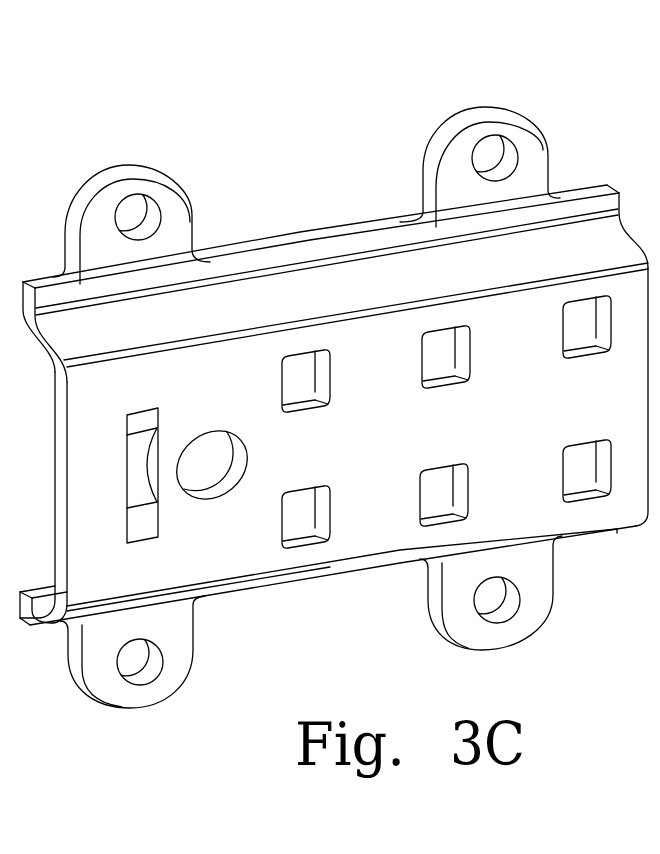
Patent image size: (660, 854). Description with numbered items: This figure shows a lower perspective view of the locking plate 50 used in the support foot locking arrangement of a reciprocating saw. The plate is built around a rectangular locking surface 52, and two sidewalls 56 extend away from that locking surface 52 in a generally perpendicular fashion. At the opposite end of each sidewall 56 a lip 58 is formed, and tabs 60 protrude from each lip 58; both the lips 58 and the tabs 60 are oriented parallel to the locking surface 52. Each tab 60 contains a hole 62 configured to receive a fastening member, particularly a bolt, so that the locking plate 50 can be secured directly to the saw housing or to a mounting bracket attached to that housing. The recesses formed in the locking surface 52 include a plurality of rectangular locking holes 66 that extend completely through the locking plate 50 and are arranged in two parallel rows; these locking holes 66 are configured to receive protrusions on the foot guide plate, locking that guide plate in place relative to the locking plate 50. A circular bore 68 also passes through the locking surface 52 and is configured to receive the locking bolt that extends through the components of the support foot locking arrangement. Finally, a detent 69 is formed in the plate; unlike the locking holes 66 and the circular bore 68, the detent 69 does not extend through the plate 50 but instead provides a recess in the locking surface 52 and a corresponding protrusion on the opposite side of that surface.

The locking plate 50 is at (558, 84).
The locking surface 52 is at (620, 387).
The sidewall 56 is at (87, 316).
The lip 58 is at (277, 255).
The tab 60 is at (107, 183).
The hole 62 is at (492, 143).
The rectangular locking hole 66 is at (437, 341).
The circular bore 68 is at (215, 466).
The detent 69 is at (137, 475).